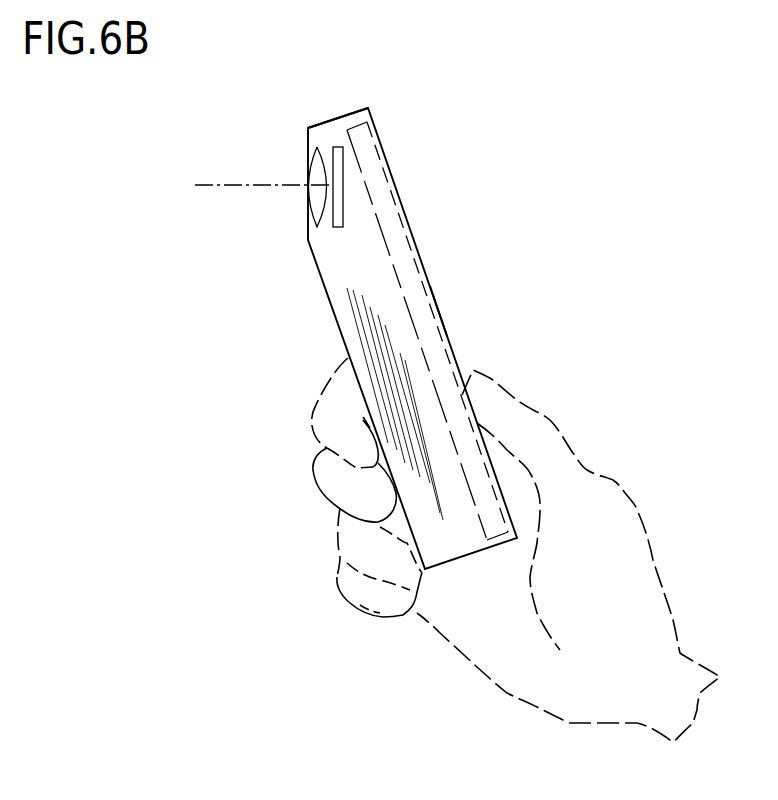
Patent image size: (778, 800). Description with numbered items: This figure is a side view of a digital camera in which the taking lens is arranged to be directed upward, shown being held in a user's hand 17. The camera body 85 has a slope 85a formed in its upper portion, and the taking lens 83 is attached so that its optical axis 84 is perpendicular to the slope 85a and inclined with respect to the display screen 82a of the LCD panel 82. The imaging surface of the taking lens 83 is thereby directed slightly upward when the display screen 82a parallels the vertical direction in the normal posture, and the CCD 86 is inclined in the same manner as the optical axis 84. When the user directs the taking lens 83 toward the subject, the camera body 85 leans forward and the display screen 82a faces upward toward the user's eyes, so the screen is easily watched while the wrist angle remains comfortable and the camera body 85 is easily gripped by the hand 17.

The user's hand 17 is at (625, 493).
The LCD panel 82 is at (407, 219).
The display screen 82a is at (438, 312).
The taking lens 83 is at (318, 202).
The optical axis 84 is at (252, 184).
The camera body 85 is at (363, 107).
The slope 85a is at (308, 130).
The CCD 86 is at (338, 227).